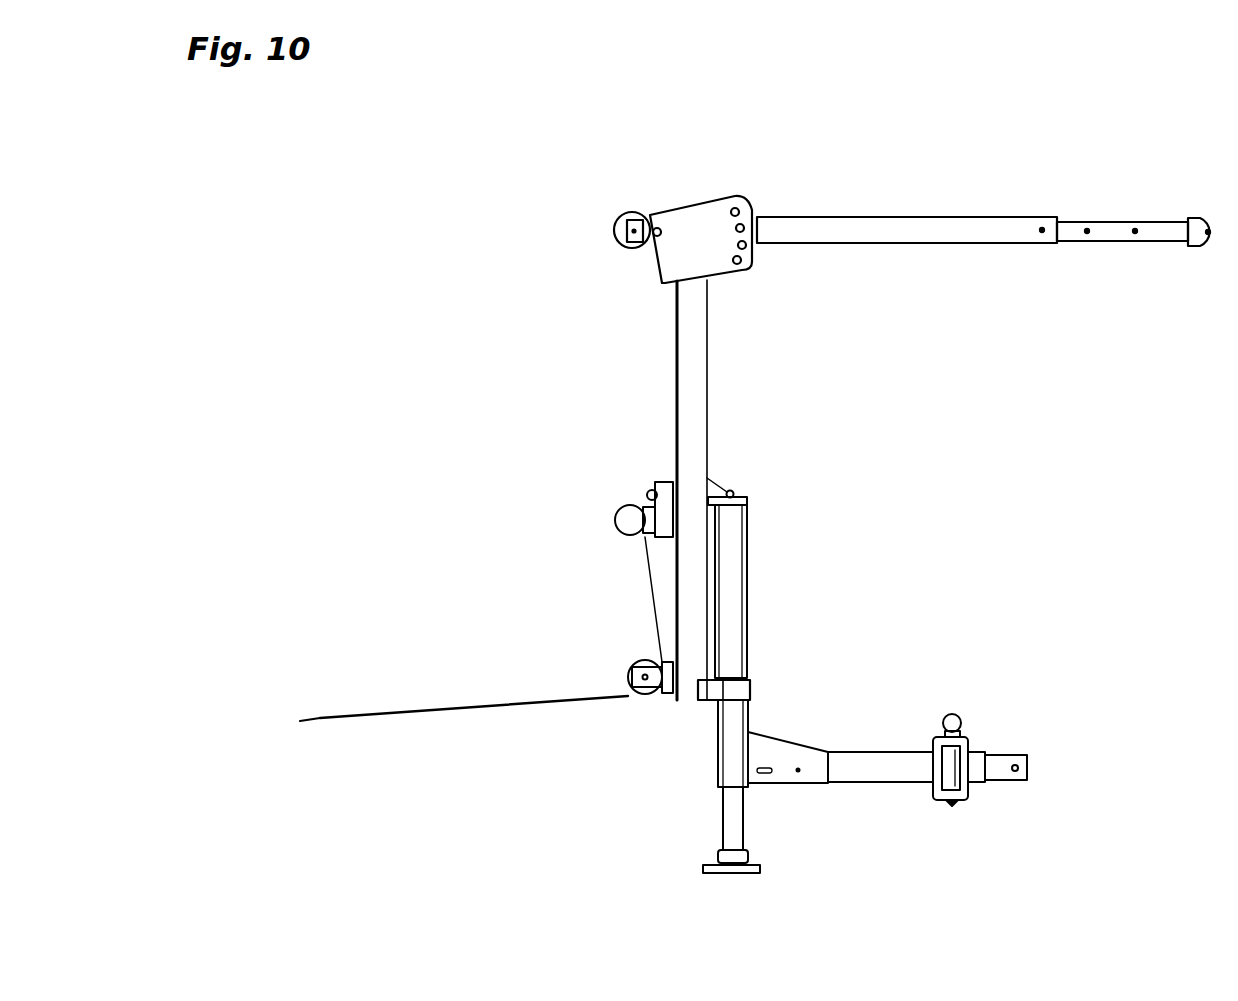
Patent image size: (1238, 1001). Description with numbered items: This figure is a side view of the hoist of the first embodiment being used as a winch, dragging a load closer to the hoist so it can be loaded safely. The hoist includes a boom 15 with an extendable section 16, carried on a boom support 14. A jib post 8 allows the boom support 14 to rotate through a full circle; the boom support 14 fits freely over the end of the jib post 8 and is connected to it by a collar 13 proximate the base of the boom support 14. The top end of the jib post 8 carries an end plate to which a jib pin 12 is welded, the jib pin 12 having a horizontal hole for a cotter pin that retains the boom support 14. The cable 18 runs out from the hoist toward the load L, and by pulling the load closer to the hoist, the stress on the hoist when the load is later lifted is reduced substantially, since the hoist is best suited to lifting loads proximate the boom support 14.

The jib post 8 is at (748, 607).
The jib pin 12 is at (732, 492).
The collar 13 is at (753, 683).
The boom support 14 is at (707, 387).
The boom 15 is at (1030, 248).
The extendable section 16 is at (1125, 248).
The cable 18 is at (343, 712).
The load line L is at (300, 721).